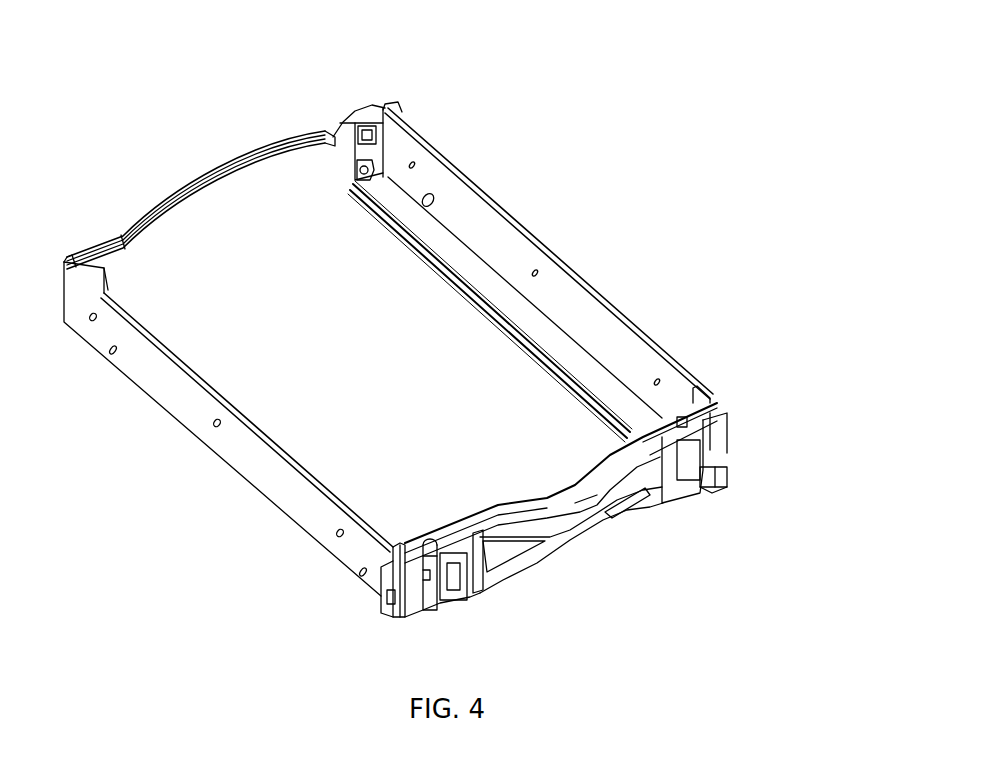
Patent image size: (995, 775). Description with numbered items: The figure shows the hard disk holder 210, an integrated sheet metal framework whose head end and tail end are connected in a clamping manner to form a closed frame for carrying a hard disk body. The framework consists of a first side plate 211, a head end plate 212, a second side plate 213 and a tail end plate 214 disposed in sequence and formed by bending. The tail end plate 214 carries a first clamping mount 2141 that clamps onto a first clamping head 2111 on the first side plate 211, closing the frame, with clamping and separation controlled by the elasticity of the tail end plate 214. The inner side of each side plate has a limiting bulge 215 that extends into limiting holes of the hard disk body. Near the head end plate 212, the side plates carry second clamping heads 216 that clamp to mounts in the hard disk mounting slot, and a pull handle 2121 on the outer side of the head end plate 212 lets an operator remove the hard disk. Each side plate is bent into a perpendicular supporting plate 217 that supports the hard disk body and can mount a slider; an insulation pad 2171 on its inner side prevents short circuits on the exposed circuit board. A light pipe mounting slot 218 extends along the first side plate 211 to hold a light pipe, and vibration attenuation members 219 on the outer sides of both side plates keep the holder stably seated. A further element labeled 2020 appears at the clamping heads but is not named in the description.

The hard disk holder 210 is at (203, 78).
The first side plate 211 is at (583, 310).
The first clamping head 2111 is at (365, 127).
The head end plate 212 is at (587, 483).
The pull handle 2121 is at (587, 517).
The second side plate 213 is at (257, 470).
The tail end plate 214 is at (193, 180).
The first clamping mount 2141 is at (347, 113).
The limiting bulge 215 is at (440, 190).
The second clamping head 216 is at (393, 603).
The supporting plate 217 is at (375, 215).
The insulation pad 2171 is at (477, 273).
The light pipe mounting slot 218 is at (520, 340).
The vibration attenuation member 219 is at (210, 425).
The latch 2020 is at (723, 440).